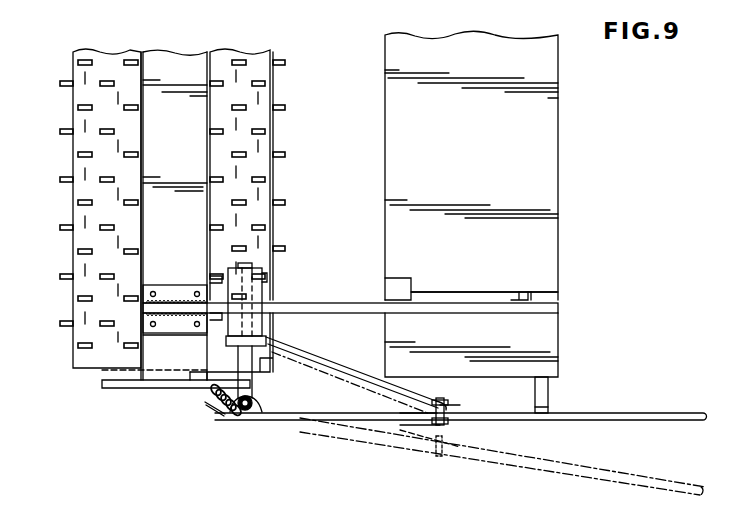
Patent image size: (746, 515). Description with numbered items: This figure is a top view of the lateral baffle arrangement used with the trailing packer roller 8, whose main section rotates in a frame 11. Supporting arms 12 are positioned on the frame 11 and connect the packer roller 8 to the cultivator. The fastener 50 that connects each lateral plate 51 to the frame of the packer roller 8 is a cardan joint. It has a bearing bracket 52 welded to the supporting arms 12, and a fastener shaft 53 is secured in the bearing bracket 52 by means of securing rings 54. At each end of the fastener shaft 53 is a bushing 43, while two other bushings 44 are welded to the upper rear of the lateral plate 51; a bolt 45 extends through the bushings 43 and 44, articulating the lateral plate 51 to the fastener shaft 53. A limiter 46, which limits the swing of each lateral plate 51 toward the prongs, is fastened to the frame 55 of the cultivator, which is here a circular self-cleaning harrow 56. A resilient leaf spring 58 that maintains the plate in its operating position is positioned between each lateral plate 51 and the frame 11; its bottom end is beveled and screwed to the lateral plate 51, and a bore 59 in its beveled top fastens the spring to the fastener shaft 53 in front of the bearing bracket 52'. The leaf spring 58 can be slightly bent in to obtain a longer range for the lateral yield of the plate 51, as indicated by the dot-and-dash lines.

The packer roller 8 is at (108, 62).
The frame 11 is at (183, 62).
The supporting arms 12 is at (322, 304).
The bushing 43 is at (292, 422).
The bushings 44 is at (262, 412).
The bolt 45 is at (248, 421).
The limiter 46 is at (548, 398).
The fastener 50 is at (212, 346).
The lateral plate 51 is at (636, 412).
The bearing bracket 52 is at (295, 281).
The bearing bracket 52' is at (224, 429).
The fastener shaft 53 is at (252, 376).
The securing rings 54 is at (258, 268).
The frame 55 is at (535, 124).
The circular self-cleaning harrow 56 is at (537, 264).
The leaf spring 58 is at (330, 372).
The bore 59 is at (200, 322).